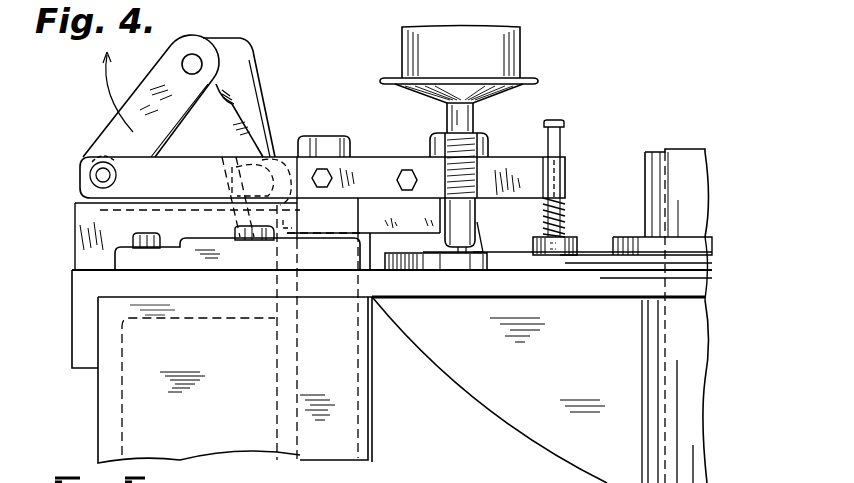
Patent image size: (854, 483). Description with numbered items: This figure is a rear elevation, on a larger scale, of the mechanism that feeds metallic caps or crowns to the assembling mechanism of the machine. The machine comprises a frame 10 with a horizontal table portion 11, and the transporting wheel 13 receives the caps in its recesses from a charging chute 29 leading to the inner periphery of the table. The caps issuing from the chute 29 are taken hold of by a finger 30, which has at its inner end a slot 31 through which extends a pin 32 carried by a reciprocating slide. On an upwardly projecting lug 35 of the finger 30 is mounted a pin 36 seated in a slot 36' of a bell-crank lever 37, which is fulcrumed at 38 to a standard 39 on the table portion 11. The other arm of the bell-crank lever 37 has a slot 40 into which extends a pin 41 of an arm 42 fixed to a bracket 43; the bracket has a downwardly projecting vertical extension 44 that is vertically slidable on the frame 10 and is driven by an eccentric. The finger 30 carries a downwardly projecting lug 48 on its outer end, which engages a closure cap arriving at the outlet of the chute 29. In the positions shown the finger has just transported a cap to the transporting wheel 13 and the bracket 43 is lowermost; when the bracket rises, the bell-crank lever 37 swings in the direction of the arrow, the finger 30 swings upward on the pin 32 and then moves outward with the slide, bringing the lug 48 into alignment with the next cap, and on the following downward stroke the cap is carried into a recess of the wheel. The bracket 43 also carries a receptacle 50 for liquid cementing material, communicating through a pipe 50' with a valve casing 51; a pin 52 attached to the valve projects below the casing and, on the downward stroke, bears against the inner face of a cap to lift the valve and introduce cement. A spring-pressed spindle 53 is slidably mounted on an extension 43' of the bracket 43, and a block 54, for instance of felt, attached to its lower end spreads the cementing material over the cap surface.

The frame 10 is at (110, 406).
The horizontal table portion 11 is at (80, 282).
The transporting wheel 13 is at (605, 262).
The charging chute 29 is at (490, 390).
The finger 30 is at (380, 214).
The slot 31 is at (237, 254).
The pin 32 is at (303, 182).
The upwardly projecting lug 35 is at (279, 152).
The pin 36 is at (280, 196).
The slot 36' is at (203, 233).
The bell-crank lever 37 is at (253, 100).
The fulcrum 38 is at (194, 58).
The standard 39 is at (151, 96).
The slot 40 is at (110, 153).
The pin 41 is at (95, 176).
The arm 42 is at (243, 160).
The bracket 43 is at (322, 180).
The extension 43' is at (243, 195).
The vertical extension 44 is at (355, 472).
The downwardly projecting lug 48 is at (480, 253).
The receptacle 50 is at (467, 65).
The pipe 50' is at (482, 118).
The valve casing 51 is at (472, 222).
The pin 52 is at (462, 254).
The spring-pressed spindle 53 is at (562, 134).
The block 54 is at (577, 246).